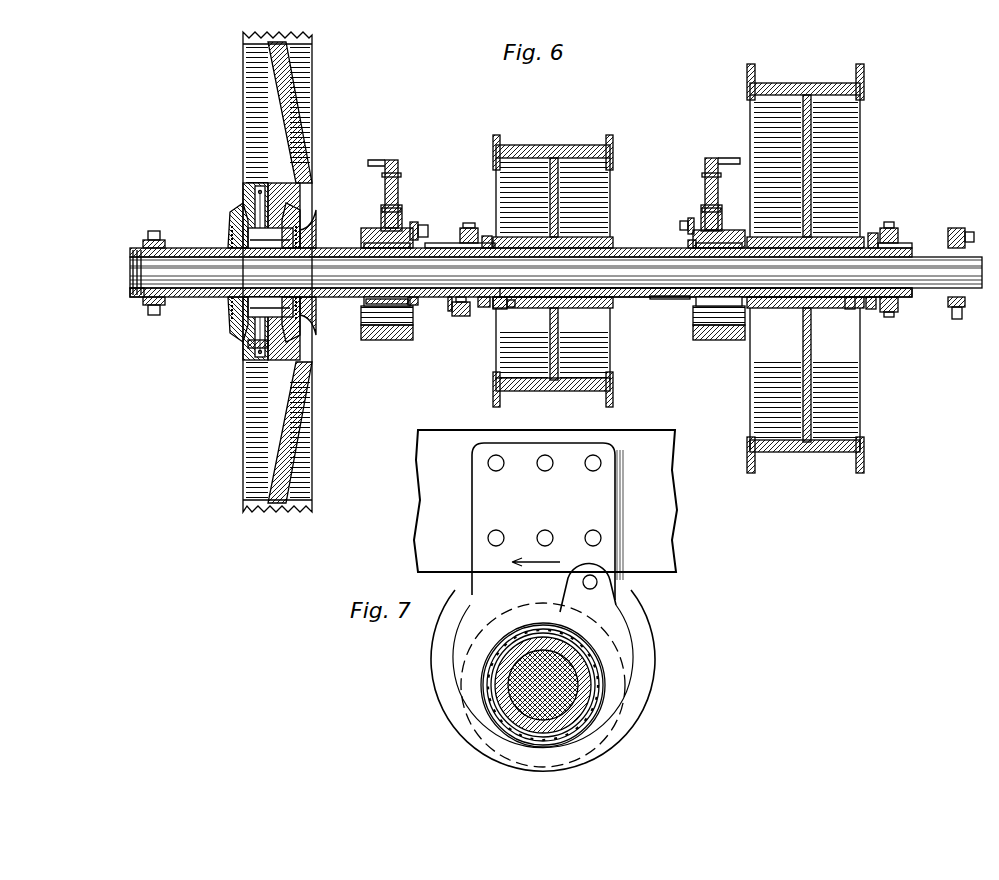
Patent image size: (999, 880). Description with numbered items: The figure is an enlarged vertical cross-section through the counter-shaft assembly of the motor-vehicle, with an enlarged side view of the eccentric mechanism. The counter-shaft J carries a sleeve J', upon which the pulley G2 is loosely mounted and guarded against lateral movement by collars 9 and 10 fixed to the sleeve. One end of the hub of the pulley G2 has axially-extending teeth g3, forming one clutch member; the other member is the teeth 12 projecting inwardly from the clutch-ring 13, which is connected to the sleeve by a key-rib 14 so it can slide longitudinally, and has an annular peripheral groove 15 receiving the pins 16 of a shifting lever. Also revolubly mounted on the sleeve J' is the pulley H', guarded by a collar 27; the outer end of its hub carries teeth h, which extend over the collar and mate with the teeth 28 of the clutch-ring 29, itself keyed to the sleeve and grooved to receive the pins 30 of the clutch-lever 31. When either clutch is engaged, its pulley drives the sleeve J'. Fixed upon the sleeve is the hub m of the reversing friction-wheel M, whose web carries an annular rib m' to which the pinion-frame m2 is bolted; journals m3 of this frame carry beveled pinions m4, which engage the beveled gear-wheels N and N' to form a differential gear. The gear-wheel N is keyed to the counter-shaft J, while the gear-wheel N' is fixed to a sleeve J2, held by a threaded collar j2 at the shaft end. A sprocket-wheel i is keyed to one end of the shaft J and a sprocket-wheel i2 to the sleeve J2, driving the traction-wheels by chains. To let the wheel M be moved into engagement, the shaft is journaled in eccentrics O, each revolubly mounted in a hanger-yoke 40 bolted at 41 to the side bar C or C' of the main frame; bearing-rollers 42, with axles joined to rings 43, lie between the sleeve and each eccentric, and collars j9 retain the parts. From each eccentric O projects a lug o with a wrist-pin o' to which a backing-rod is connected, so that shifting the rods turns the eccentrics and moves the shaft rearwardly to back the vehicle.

In FIG. 6, the collar 9 is at (618, 240).
In FIG. 6, the sleeve J2 is at (200, 242).
In FIG. 6, the counter-shaft J is at (706, 308).
In FIG. 7, the counter-shaft J is at (510, 716).
In FIG. 6, the sleeve J' is at (670, 314).
In FIG. 7, the sleeve J' is at (533, 685).
In FIG. 6, the threaded collar j2 is at (128, 298).
In FIG. 6, the sprocket-wheel i2 is at (146, 238).
In FIG. 6, the reversing gear-wheel M is at (290, 272).
In FIG. 6, the hub m is at (316, 272).
In FIG. 6, the annular rib m' is at (307, 258).
In FIG. 6, the pinion-frame m2 is at (250, 188).
In FIG. 6, the journals m3 is at (242, 205).
In FIG. 6, the beveled pinions m4 is at (240, 344).
In FIG. 6, the beveled gear-wheel N' is at (217, 272).
In FIG. 6, the beveled gear-wheel N is at (311, 272).
In FIG. 6, the eccentrics O is at (382, 340).
In FIG. 7, the eccentrics O is at (650, 690).
In FIG. 6, the hanger-yoke 40 is at (400, 340).
In FIG. 7, the hanger-yoke 40 is at (636, 640).
In FIG. 6, the bearing-rollers 42 is at (366, 228).
In FIG. 7, the bearing-rollers 42 is at (600, 680).
In FIG. 6, the rings 43 is at (408, 304).
In FIG. 7, the rings 43 is at (610, 636).
In FIG. 6, the collars j9 is at (418, 303).
In FIG. 6, the side bar C is at (385, 184).
In FIG. 6, the bolts 41 is at (400, 176).
In FIG. 7, the bolts 41 is at (590, 540).
In FIG. 6, the wrist-pin o' is at (552, 222).
In FIG. 7, the wrist-pin o' is at (575, 569).
In FIG. 7, the arm or lug o is at (607, 587).
In FIG. 6, the key-rib 14 is at (440, 244).
In FIG. 6, the pins 16 is at (465, 226).
In FIG. 6, the teeth 12 is at (486, 236).
In FIG. 6, the clutch-ring 13 is at (458, 318).
In FIG. 6, the annular peripheral groove 15 is at (450, 320).
In FIG. 6, the teeth g3 is at (506, 312).
In FIG. 6, the collar 10 is at (512, 306).
In FIG. 6, the pulley G2 is at (553, 262).
In FIG. 6, the side bar C' is at (720, 177).
In FIG. 7, the side bar C' is at (545, 515).
In FIG. 6, the pulley H' is at (817, 268).
In FIG. 6, the teeth h is at (850, 310).
In FIG. 6, the collar 27 is at (874, 240).
In FIG. 6, the pins 30 is at (896, 232).
In FIG. 6, the clutch-lever 31 is at (888, 226).
In FIG. 6, the clutch-ring 29 is at (904, 242).
In FIG. 6, the teeth 28 is at (872, 304).
In FIG. 6, the sprocket-wheel i is at (966, 232).